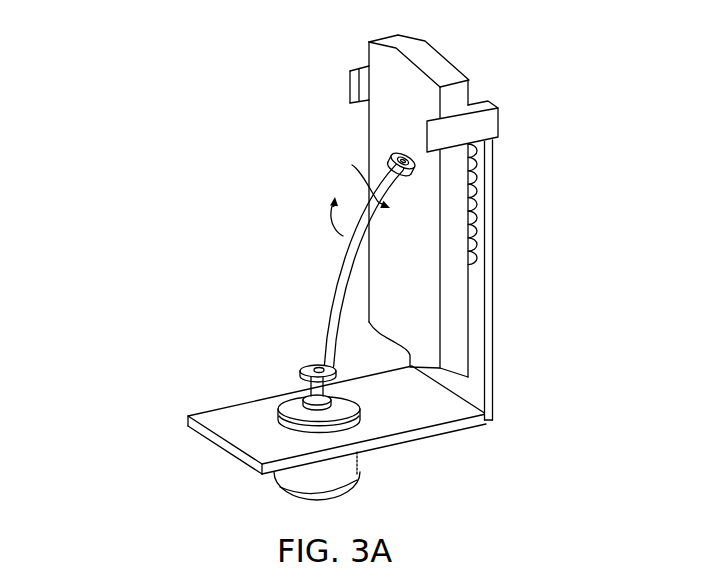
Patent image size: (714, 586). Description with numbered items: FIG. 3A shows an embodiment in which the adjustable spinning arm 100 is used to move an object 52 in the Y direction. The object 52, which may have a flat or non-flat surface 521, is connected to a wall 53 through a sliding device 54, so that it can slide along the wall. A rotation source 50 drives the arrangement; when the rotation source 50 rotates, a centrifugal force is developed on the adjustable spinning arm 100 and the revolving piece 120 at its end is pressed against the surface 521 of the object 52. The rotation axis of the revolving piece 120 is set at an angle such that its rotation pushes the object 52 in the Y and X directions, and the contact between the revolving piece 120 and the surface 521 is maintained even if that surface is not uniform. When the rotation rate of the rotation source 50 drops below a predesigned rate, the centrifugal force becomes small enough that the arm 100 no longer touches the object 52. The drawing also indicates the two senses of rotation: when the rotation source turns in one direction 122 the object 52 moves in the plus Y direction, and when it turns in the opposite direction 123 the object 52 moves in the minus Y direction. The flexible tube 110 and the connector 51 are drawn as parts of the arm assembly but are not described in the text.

The adjustable spinning arm 100 is at (317, 280).
The flexible tube 110 is at (298, 278).
The revolving piece 120 is at (372, 150).
The one direction of rotation 122 is at (341, 169).
The opposite direction of rotation 123 is at (319, 201).
The rotation source 50 is at (363, 484).
The tube connector 51 is at (288, 375).
The object 52 is at (451, 76).
The wall 53 is at (503, 218).
The sliding device 54 is at (497, 258).
The surface 521 is at (420, 316).